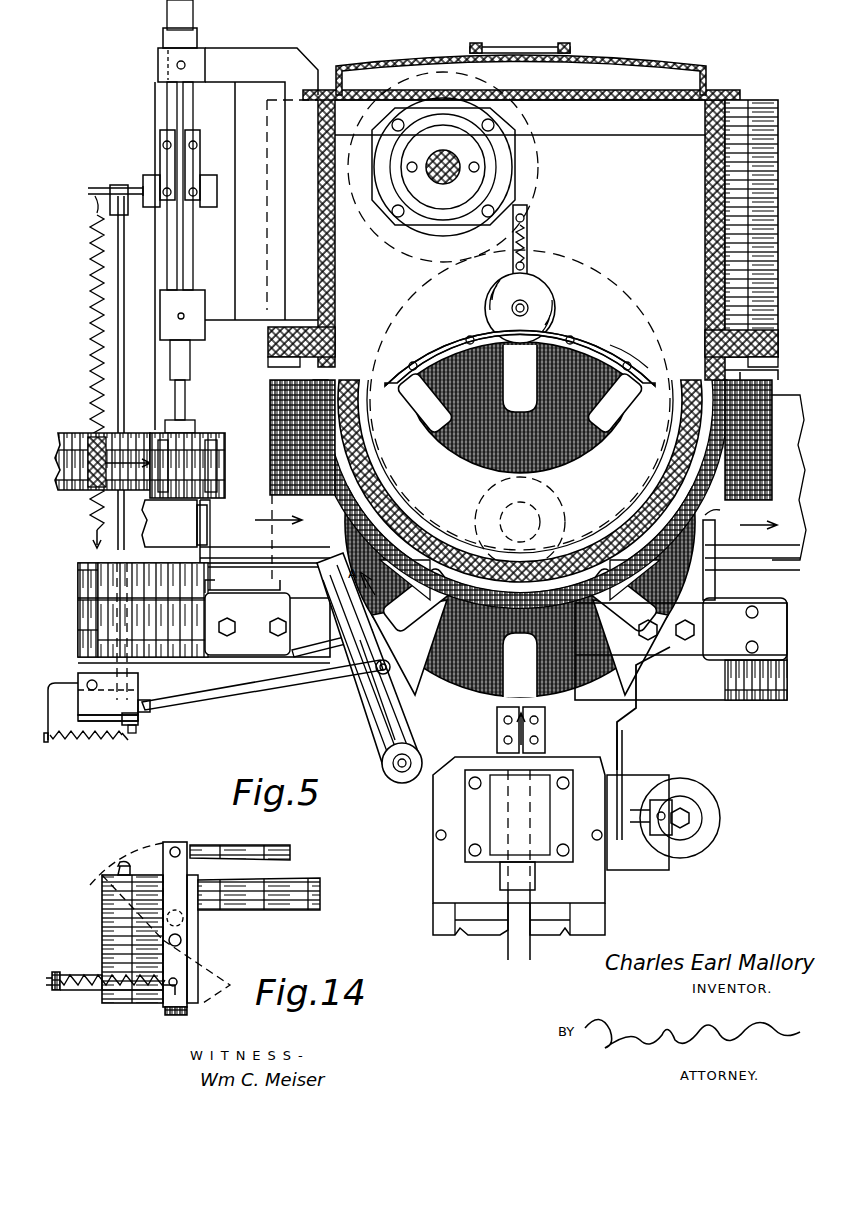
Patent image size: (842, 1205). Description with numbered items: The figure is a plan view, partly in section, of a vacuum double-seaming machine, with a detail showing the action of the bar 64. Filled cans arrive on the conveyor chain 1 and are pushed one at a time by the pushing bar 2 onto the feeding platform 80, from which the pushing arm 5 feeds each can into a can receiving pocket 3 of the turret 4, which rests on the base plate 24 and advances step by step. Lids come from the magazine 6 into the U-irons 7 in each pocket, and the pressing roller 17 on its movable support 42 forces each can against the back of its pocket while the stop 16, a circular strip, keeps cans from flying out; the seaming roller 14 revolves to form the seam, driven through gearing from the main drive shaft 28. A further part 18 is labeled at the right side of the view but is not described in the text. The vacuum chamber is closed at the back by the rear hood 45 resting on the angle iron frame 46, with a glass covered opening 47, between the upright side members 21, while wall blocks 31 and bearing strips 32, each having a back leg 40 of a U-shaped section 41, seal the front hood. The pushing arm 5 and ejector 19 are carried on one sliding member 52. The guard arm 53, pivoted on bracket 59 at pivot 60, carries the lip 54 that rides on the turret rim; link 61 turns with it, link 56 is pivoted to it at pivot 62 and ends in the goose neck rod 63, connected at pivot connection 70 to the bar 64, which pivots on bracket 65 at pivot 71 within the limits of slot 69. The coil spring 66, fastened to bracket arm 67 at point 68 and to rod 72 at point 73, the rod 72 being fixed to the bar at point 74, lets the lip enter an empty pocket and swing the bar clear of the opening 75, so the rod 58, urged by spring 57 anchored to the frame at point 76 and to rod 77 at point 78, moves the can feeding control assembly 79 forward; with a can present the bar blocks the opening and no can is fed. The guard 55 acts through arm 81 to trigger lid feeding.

In FIG. 5, the conveyor chain 1 is at (82, 440).
In FIG. 5, the pushing bar 2 is at (205, 420).
In FIG. 5, the can receiving pocket 3 is at (405, 634).
In FIG. 5, the turret 4 is at (605, 338).
In FIG. 5, the pushing arm 5 is at (180, 520).
In FIG. 5, the magazine 6 is at (500, 805).
In FIG. 5, the U-irons 7 is at (448, 635).
In FIG. 5, the seaming roller 14 is at (468, 484).
In FIG. 5, the stop 16 is at (445, 348).
In FIG. 5, the pressing roller 17 is at (550, 300).
In FIG. 5, the feed channel 18 is at (727, 515).
In FIG. 5, the ejector 19 is at (712, 572).
In FIG. 5, the upright side members 21 is at (320, 293).
In FIG. 5, the base plate 24 is at (280, 568).
In FIG. 5, the main drive shaft 28 is at (458, 160).
In FIG. 5, the wall blocks 31 is at (300, 455).
In FIG. 5, the bearing strips 32 is at (332, 356).
In FIG. 5, the back leg 40 is at (285, 356).
In FIG. 5, the U-shaped section 41 is at (795, 375).
In FIG. 5, the movable support 42 is at (532, 235).
In FIG. 5, the rear hood 45 is at (600, 57).
In FIG. 5, the angle iron frame 46 is at (705, 113).
In FIG. 5, the glass covered opening 47 is at (500, 46).
In FIG. 5, the sliding member 52 is at (320, 665).
In FIG. 5, the guard arm 53 is at (305, 642).
In FIG. 5, the lip 54 is at (300, 578).
In FIG. 5, the guard 55 is at (645, 680).
In FIG. 5, the link 56 is at (248, 690).
In FIG. 14, the link 56 is at (250, 860).
In FIG. 5, the spring 57 is at (90, 282).
In FIG. 5, the rod 58 is at (122, 315).
In FIG. 5, the bracket 59 is at (388, 740).
In FIG. 5, the pivot 60 is at (392, 768).
In FIG. 5, the link 61 is at (372, 722).
In FIG. 5, the pivot 62 is at (362, 698).
In FIG. 5, the goose neck rod 63 is at (148, 690).
In FIG. 14, the goose neck rod 63 is at (198, 848).
In FIG. 5, the bar 64 is at (90, 718).
In FIG. 14, the bar 64 is at (180, 895).
In FIG. 5, the bracket 65 is at (112, 700).
In FIG. 14, the bracket 65 is at (118, 920).
In FIG. 5, the coil spring 66 is at (80, 745).
In FIG. 14, the coil spring 66 is at (120, 995).
In FIG. 5, the bracket arm 67 is at (70, 680).
In FIG. 14, the bracket arm 67 is at (55, 970).
In FIG. 5, the spring attachment point 68 is at (46, 745).
In FIG. 14, the spring attachment point 68 is at (58, 995).
In FIG. 5, the slot 69 is at (130, 742).
In FIG. 14, the slot 69 is at (160, 1000).
In FIG. 14, the pivot connection 70 is at (172, 842).
In FIG. 14, the pivot 71 is at (182, 944).
In FIG. 5, the rod 72 is at (140, 733).
In FIG. 5, the spring attachment point 73 is at (120, 742).
In FIG. 14, the spring attachment point 73 is at (168, 975).
In FIG. 14, the attachment point 74 is at (168, 1015).
In FIG. 5, the opening 75 is at (95, 612).
In FIG. 14, the opening 75 is at (185, 922).
In FIG. 5, the frame attachment point 76 is at (90, 530).
In FIG. 5, the rod 77 is at (92, 190).
In FIG. 5, the spring attachment point 78 is at (96, 212).
In FIG. 5, the can feeding control assembly 79 is at (150, 235).
In FIG. 5, the feeding platform 80 is at (228, 512).
In FIG. 5, the arm 81 is at (625, 750).